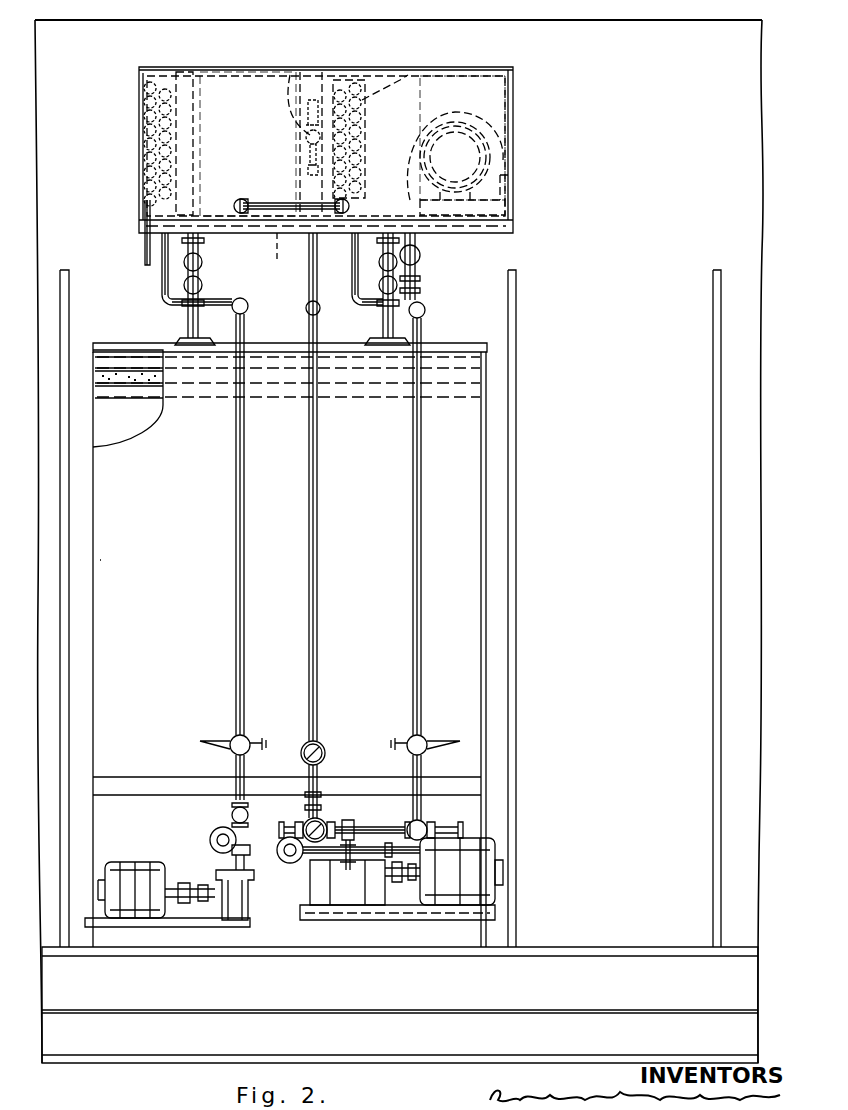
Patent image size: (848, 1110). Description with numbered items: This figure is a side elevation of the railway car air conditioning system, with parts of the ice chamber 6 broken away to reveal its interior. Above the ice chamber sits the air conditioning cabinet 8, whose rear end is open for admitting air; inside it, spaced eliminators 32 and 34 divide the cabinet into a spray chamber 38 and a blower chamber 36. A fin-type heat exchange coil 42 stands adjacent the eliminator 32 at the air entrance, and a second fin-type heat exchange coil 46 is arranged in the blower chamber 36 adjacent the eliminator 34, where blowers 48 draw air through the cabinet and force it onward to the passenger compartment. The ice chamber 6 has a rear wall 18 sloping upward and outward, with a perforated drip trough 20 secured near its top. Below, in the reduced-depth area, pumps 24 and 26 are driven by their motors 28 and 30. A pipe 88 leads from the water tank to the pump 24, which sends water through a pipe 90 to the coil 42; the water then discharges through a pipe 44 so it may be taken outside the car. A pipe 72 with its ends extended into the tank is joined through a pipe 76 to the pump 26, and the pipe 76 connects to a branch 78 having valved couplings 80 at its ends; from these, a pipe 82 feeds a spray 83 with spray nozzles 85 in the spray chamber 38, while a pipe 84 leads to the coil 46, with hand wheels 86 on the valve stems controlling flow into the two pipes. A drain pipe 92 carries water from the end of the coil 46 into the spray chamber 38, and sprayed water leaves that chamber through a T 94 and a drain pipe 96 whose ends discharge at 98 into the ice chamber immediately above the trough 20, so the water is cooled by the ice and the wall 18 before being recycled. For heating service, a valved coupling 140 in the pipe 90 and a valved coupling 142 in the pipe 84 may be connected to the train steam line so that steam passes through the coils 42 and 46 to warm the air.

The ice chamber 6 is at (128, 582).
The air conditioning cabinet 8 is at (513, 90).
The rear wall 18 is at (470, 540).
The perforated drip trough 20 is at (130, 378).
The pump 24 is at (252, 900).
The pump 26 is at (322, 893).
The motor 28 is at (145, 862).
The motor 30 is at (470, 850).
The eliminator 32 is at (185, 78).
The eliminator 34 is at (345, 82).
The blower chamber 36 is at (438, 100).
The spray chamber 38 is at (245, 104).
The heat exchange coil 42 is at (148, 75).
The pipe 44 is at (145, 252).
The heat exchange coil 46 is at (380, 90).
The blowers 48 is at (470, 160).
The pipe 72 is at (278, 858).
The pipe 76 is at (348, 820).
The branch 78 is at (375, 826).
The valved couplings 80 is at (300, 822).
The pipe 82 is at (317, 605).
The spray 83 is at (295, 100).
The pipe 84 is at (421, 610).
The spray nozzles 85 is at (318, 98).
The hand wheels 86 is at (282, 822).
The pipe 88 is at (222, 828).
The pipe 90 is at (244, 572).
The drain pipe 92 is at (270, 200).
The T 94 is at (286, 260).
The drain pipe 96 is at (200, 270).
The discharge ends 98 is at (180, 340).
The valved coupling 140 is at (232, 738).
The valved coupling 142 is at (425, 738).